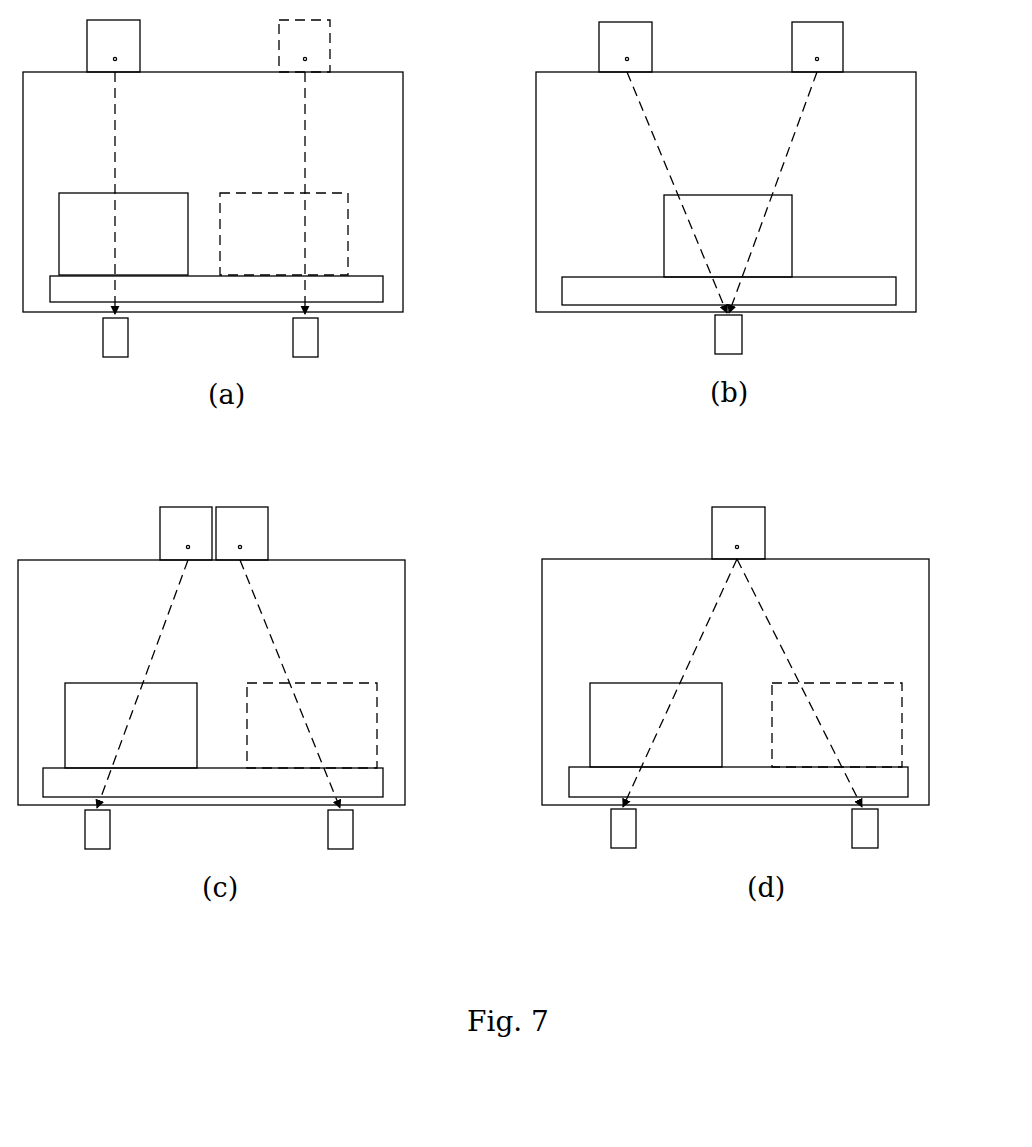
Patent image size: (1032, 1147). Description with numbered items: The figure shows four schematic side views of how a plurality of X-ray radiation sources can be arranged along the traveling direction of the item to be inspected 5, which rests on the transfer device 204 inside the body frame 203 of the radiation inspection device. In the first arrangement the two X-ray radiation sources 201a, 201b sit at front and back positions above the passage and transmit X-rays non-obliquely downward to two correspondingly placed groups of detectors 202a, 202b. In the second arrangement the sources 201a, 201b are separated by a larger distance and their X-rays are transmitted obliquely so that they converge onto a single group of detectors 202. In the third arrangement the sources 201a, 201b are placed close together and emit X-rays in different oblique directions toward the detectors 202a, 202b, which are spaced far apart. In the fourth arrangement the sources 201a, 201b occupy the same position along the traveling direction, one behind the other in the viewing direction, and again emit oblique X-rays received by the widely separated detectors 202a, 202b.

The item to be inspected 5 is at (480, 480).
The X-ray radiation source 201a is at (132, 43).
The X-ray radiation source 201b is at (322, 43).
The detector 202 is at (742, 332).
The detector 202a is at (127, 337).
The detector 202b is at (318, 337).
The body frame 203 is at (23, 120).
The transfer device 204 is at (475, 536).